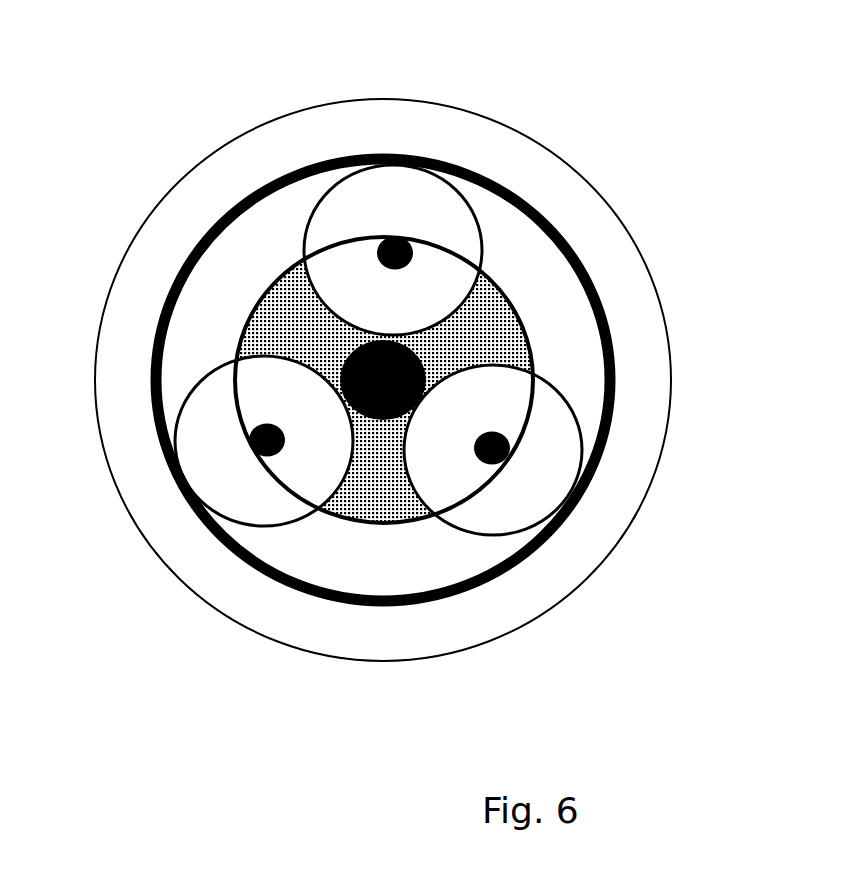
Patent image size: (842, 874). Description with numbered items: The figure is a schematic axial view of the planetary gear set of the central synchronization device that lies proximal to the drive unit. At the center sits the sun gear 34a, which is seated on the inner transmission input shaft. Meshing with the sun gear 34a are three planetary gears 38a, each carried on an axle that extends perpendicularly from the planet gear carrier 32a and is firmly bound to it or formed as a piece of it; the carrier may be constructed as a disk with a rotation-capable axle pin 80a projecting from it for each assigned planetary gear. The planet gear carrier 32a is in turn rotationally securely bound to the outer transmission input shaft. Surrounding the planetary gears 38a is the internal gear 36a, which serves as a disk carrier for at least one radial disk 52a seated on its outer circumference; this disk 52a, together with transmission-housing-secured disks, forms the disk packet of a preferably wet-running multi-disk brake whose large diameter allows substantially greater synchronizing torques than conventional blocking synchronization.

The planet gear carrier 32a is at (345, 319).
The sun gear 34a is at (527, 320).
The internal gear 36a is at (583, 368).
The planetary gears 38a is at (363, 197).
The radial disk 52a is at (647, 405).
The axle pin 80a is at (422, 233).